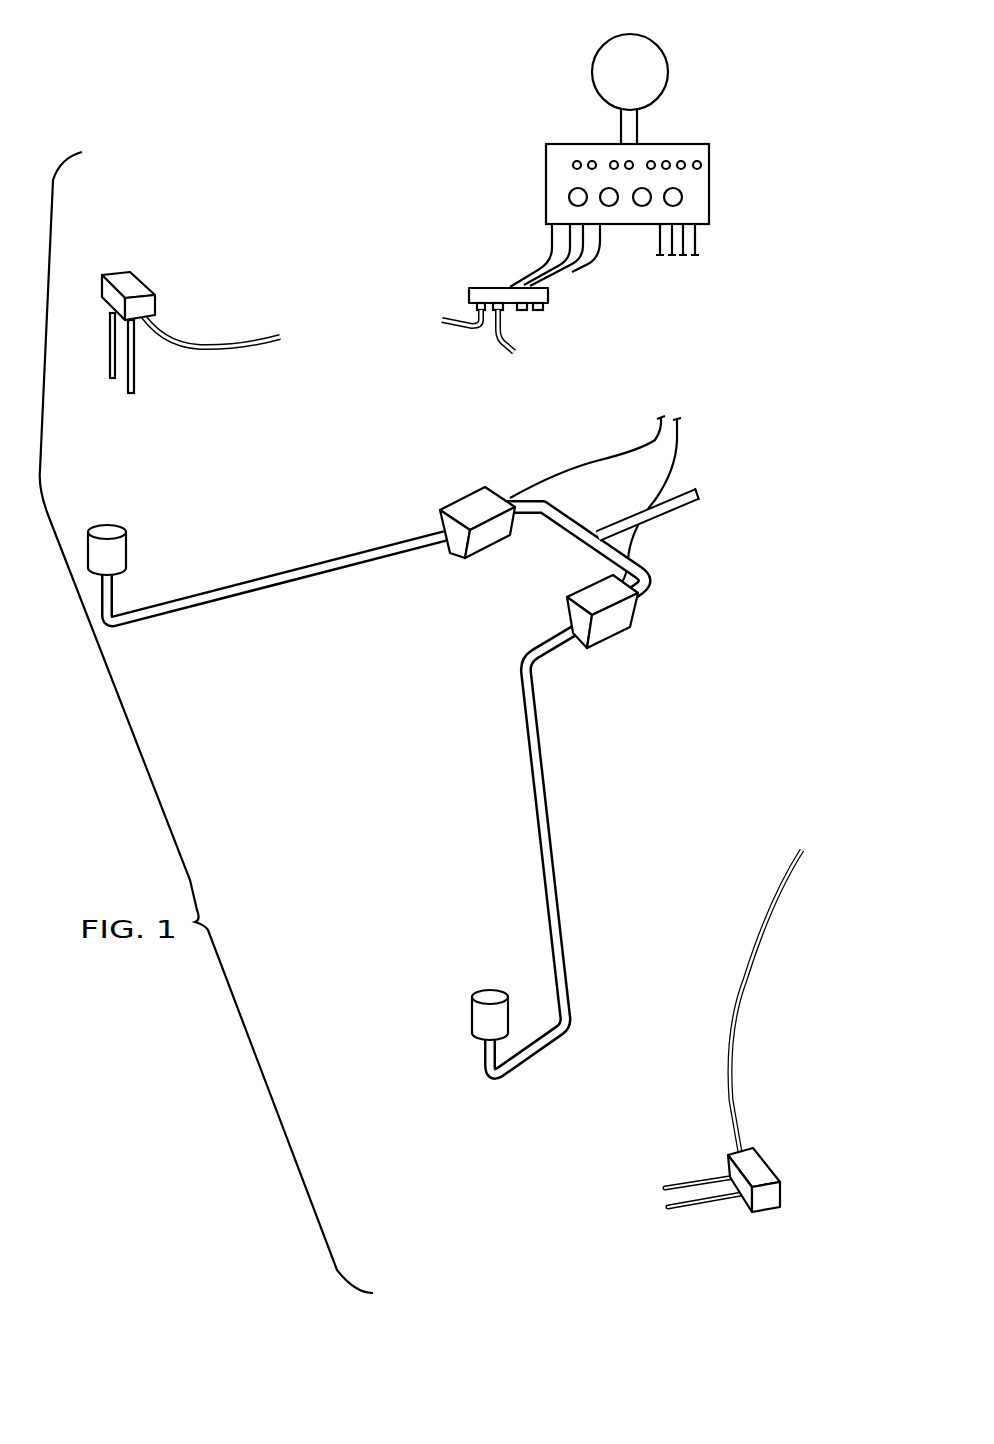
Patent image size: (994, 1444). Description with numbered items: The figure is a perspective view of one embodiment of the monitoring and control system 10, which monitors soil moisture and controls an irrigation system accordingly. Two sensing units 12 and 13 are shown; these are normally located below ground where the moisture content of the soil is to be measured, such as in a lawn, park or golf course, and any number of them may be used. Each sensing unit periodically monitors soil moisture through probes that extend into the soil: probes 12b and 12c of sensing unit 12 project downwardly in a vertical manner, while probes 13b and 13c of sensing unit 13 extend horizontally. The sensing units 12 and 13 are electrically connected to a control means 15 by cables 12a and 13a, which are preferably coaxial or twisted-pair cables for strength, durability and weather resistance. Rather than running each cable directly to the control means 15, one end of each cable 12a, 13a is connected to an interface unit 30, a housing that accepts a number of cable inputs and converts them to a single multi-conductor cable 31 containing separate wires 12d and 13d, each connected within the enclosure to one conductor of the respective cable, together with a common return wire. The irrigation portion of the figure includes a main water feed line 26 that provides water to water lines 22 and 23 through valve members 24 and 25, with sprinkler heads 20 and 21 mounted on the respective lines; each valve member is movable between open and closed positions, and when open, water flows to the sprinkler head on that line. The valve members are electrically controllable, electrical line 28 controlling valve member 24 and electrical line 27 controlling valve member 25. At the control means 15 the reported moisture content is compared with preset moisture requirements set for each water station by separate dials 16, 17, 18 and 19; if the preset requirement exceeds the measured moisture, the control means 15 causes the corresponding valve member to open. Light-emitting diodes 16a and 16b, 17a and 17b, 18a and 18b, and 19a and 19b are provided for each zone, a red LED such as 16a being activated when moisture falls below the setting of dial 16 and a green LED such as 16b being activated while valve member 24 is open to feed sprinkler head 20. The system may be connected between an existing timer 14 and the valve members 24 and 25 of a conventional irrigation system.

The monitoring and control system 10 is at (297, 180).
The sensing unit 12 is at (160, 272).
The cable 12a is at (227, 338).
The probe 12b is at (110, 343).
The probe 12c is at (135, 360).
The wire 12d is at (553, 250).
The sensing unit 13 is at (790, 1166).
The cable 13a is at (778, 907).
The probe 13b is at (707, 1208).
The probe 13c is at (685, 1155).
The wire 13d is at (565, 238).
The timer 14 is at (670, 70).
The control means 15 is at (520, 182).
The dial 16 is at (568, 198).
The red LED 16a is at (575, 160).
The green LED 16b is at (591, 160).
The dial 17 is at (610, 206).
The LED 17a is at (612, 160).
The LED 17b is at (631, 160).
The dial 18 is at (642, 206).
The LED 18a is at (653, 160).
The LED 18b is at (668, 160).
The dial 19 is at (682, 198).
The LED 19a is at (683, 167).
The LED 19b is at (698, 162).
The sprinkler head 20 is at (140, 548).
The sprinkler head 21 is at (458, 1010).
The water line 22 is at (303, 583).
The water line 23 is at (537, 825).
The valve member 24 is at (453, 500).
The valve member 25 is at (613, 633).
The main water feed line 26 is at (673, 510).
The electrical line 27 is at (671, 260).
The electrical line 28 is at (660, 253).
The interface unit 30 is at (448, 283).
The multi-conductor cable 31 is at (552, 270).